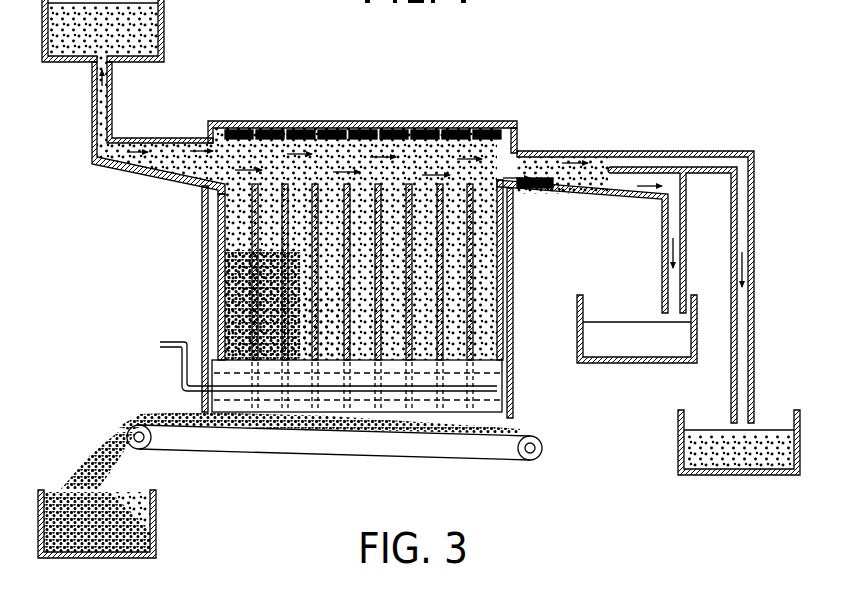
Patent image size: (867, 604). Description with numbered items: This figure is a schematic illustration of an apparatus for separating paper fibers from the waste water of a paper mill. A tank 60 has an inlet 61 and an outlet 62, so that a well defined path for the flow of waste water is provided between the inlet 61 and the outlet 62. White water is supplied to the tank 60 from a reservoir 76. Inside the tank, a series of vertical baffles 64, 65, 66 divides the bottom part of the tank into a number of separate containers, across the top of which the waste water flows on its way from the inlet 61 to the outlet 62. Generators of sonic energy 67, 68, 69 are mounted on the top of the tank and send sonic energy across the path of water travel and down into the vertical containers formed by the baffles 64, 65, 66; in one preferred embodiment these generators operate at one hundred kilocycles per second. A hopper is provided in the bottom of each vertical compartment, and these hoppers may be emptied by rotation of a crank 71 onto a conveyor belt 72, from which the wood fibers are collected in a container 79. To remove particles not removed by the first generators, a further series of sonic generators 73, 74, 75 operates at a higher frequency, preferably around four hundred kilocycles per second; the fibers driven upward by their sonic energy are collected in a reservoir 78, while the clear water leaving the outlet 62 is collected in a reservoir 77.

The tank 60 is at (202, 248).
The inlet 61 is at (207, 138).
The outlet 62 is at (563, 152).
The vertical baffle 64 is at (254, 259).
The vertical baffle 65 is at (285, 286).
The vertical baffle 66 is at (316, 311).
The sonic energy generator 67 is at (249, 130).
The sonic energy generator 68 is at (283, 130).
The sonic energy generator 69 is at (317, 130).
The crank 71 is at (183, 362).
The conveyor belt 72 is at (405, 460).
The sonic generator 73 is at (525, 192).
The sonic generator 74 is at (537, 193).
The sonic generator 75 is at (543, 193).
The reservoir 76 is at (165, 45).
The reservoir 77 is at (596, 363).
The reservoir 78 is at (753, 411).
The container 79 is at (157, 546).